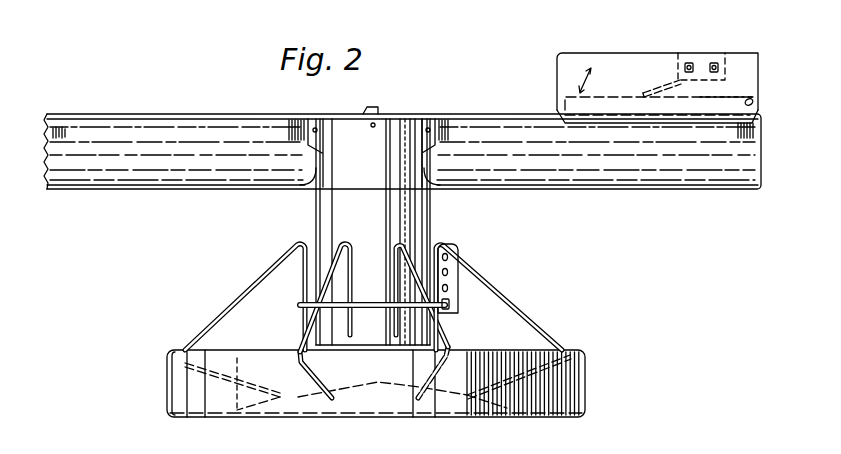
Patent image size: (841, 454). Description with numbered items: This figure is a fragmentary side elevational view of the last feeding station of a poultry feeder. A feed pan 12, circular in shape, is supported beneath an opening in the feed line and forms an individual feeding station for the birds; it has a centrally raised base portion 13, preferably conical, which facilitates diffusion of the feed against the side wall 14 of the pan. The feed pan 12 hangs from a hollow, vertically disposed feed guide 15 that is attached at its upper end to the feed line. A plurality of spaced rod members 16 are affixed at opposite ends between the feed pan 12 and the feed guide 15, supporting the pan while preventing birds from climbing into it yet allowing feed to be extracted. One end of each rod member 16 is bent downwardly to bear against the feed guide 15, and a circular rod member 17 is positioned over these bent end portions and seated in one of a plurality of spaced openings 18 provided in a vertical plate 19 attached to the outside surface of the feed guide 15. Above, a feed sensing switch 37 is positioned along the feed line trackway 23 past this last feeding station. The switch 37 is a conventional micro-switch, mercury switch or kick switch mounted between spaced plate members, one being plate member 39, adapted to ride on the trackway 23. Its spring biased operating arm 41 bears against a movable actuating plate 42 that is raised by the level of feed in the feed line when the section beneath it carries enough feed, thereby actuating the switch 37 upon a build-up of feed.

The feed pan 12 is at (405, 417).
The raised base portion 13 is at (305, 397).
The side wall 14 is at (583, 391).
The feed guide 15 is at (430, 203).
The rod members 16 is at (233, 305).
The circular rod member 17 is at (368, 302).
The spaced openings 18 is at (448, 293).
The vertical plate 19 is at (456, 278).
The feed line trackway 23 is at (175, 114).
The feed sensing switch 37 is at (727, 61).
The plate member 39 is at (565, 70).
The spring biased operating arm 41 is at (658, 89).
The movable actuating plate 42 is at (724, 93).